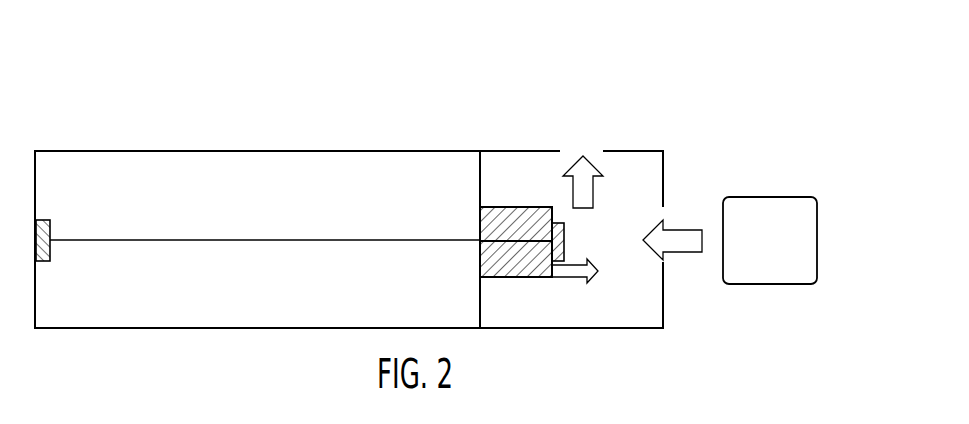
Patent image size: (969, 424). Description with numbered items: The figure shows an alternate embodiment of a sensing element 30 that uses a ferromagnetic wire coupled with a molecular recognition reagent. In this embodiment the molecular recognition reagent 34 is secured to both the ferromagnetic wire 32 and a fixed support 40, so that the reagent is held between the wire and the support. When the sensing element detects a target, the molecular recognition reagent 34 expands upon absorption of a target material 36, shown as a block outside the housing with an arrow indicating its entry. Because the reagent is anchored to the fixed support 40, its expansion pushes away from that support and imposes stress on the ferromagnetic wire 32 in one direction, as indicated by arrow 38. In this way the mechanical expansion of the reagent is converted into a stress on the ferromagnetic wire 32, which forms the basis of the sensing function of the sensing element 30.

The sensing element 30 is at (612, 98).
The ferromagnetic wire 32 is at (367, 240).
The molecular recognition reagent 34 is at (538, 207).
The target material 36 is at (808, 197).
The arrow 38 is at (581, 281).
The fixed support 40 is at (482, 302).